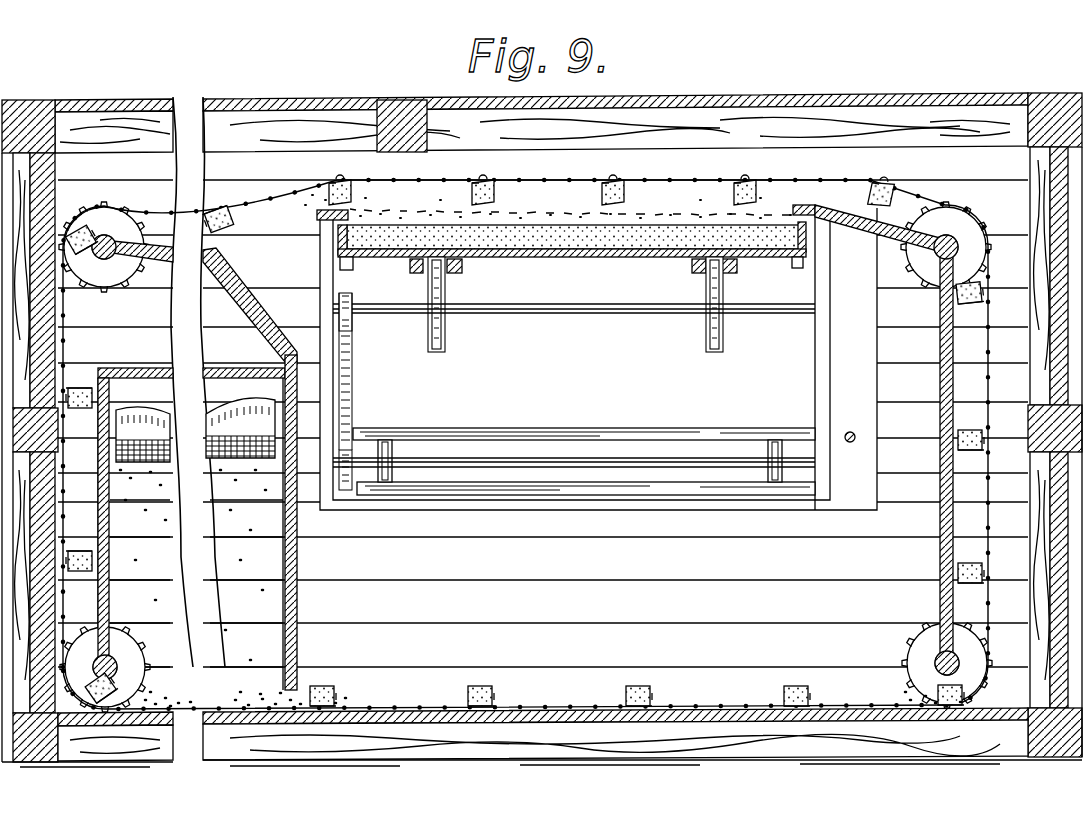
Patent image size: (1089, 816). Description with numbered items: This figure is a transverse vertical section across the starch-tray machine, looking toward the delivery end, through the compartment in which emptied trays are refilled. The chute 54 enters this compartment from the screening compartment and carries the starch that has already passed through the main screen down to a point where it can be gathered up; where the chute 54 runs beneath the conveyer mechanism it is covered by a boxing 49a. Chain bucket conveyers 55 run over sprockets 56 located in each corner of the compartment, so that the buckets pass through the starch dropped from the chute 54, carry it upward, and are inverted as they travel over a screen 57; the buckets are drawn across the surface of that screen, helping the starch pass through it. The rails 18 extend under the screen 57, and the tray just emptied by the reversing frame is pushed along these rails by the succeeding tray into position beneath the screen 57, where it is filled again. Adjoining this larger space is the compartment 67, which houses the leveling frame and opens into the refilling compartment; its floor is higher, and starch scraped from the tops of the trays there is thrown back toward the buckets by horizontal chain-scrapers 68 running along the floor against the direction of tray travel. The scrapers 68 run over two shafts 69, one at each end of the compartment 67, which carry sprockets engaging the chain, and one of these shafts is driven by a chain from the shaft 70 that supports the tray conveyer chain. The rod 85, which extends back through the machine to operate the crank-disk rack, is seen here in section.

The rails 18 is at (412, 275).
The boxing 49a is at (134, 358).
The chute 54 is at (235, 416).
The chain bucket conveyers 55 is at (488, 179).
The sprockets 56 is at (925, 647).
The screen 57 is at (557, 212).
The compartment 67 is at (591, 350).
The horizontal chain-scrapers 68 is at (770, 483).
The shafts 69 is at (478, 457).
The shaft 70 is at (498, 305).
The rod 85 is at (851, 432).